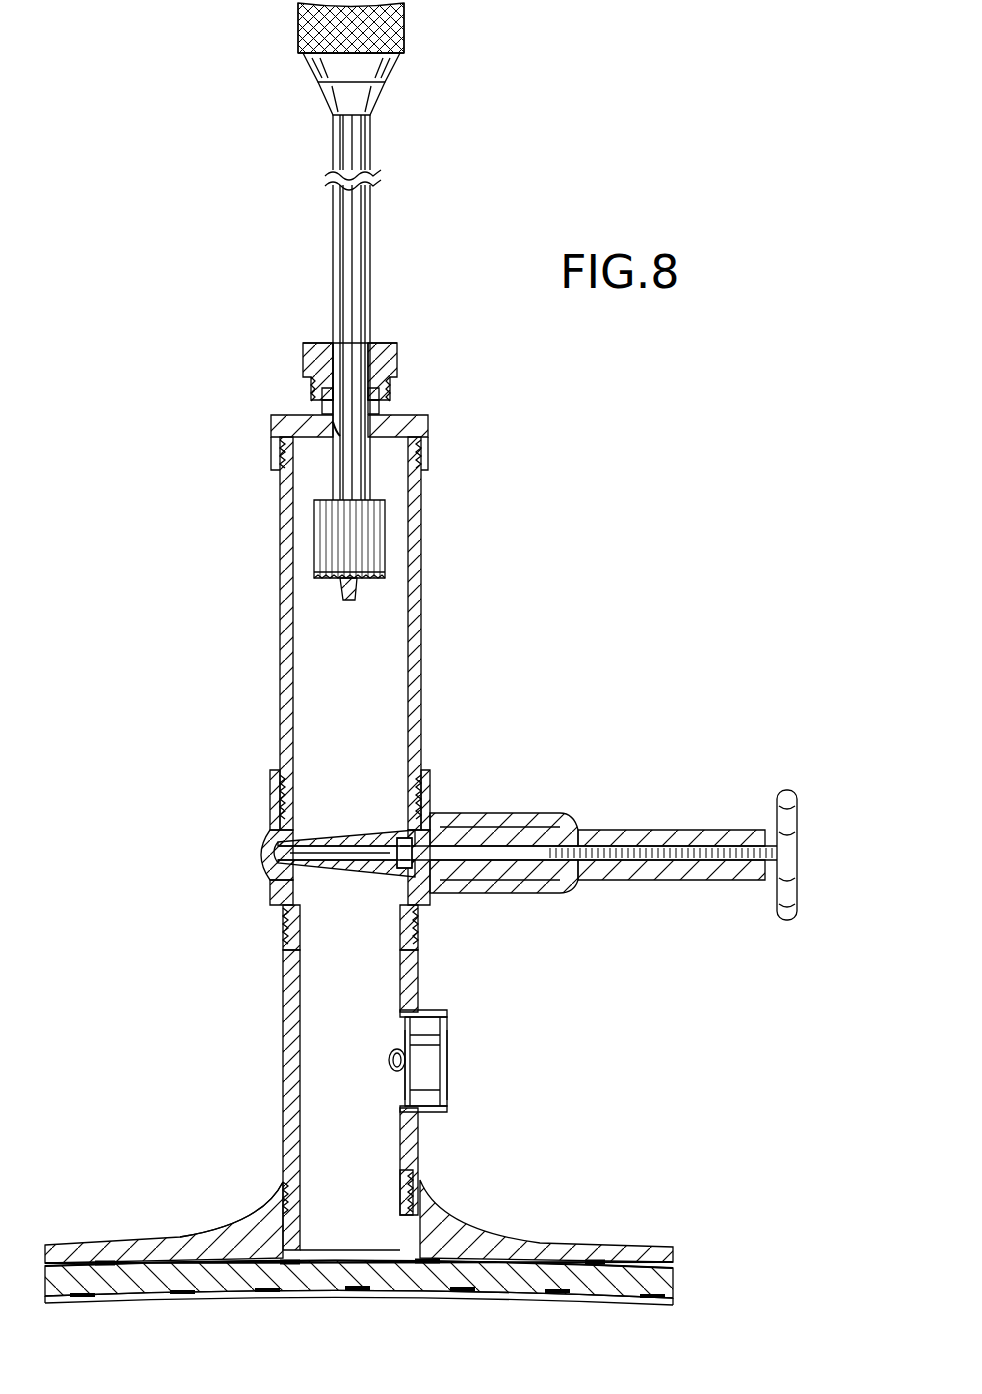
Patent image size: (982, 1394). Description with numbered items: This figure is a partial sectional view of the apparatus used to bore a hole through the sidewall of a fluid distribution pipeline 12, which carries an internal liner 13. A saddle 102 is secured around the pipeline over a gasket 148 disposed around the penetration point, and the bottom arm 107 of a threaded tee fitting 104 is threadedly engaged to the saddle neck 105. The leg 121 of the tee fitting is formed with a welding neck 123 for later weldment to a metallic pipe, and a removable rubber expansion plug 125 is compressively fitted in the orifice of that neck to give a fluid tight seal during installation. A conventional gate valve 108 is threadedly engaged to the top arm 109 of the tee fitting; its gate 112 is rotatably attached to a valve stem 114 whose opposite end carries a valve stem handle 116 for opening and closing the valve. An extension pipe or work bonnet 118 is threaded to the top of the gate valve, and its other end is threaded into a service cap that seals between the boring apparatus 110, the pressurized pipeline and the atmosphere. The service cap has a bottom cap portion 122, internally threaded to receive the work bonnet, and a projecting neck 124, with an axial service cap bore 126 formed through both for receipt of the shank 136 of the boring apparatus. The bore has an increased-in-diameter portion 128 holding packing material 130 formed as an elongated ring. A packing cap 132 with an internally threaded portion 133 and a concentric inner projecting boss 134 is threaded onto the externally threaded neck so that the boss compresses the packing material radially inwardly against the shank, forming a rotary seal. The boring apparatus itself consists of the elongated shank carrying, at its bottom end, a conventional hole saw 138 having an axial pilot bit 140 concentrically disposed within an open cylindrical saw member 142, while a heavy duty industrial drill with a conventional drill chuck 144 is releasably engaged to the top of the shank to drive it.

The fluid distribution pipeline 12 is at (590, 1282).
The internal liner 13 is at (642, 1300).
The saddle 102 is at (511, 1236).
The tee fitting 104 is at (283, 1060).
The saddle neck 105 is at (250, 1206).
The bottom arm 107 is at (418, 1165).
The gate valve 108 is at (501, 813).
The top arm 109 is at (283, 965).
The boring apparatus 110 is at (395, 215).
The gate 112 is at (353, 830).
The valve stem 114 is at (531, 862).
The valve stem handle 116 is at (798, 848).
The work bonnet 118 is at (422, 622).
The leg 121 is at (441, 1011).
The bottom cap portion 122 is at (272, 425).
The welding neck 123 is at (430, 1112).
The projecting neck 124 is at (386, 402).
The rubber expansion plug 125 is at (447, 1062).
The service cap bore 126 is at (335, 430).
The increased-in-diameter portion 128 is at (330, 394).
The packing material 130 is at (384, 392).
The packing cap 132 is at (379, 337).
The internally threaded portion 133 is at (394, 352).
The inner projecting boss 134 is at (315, 358).
The shank 136 is at (333, 242).
The hole saw 138 is at (386, 527).
The pilot bit 140 is at (350, 601).
The cylindrical saw member 142 is at (318, 578).
The drill chuck 144 is at (372, 90).
The gasket 148 is at (275, 1264).